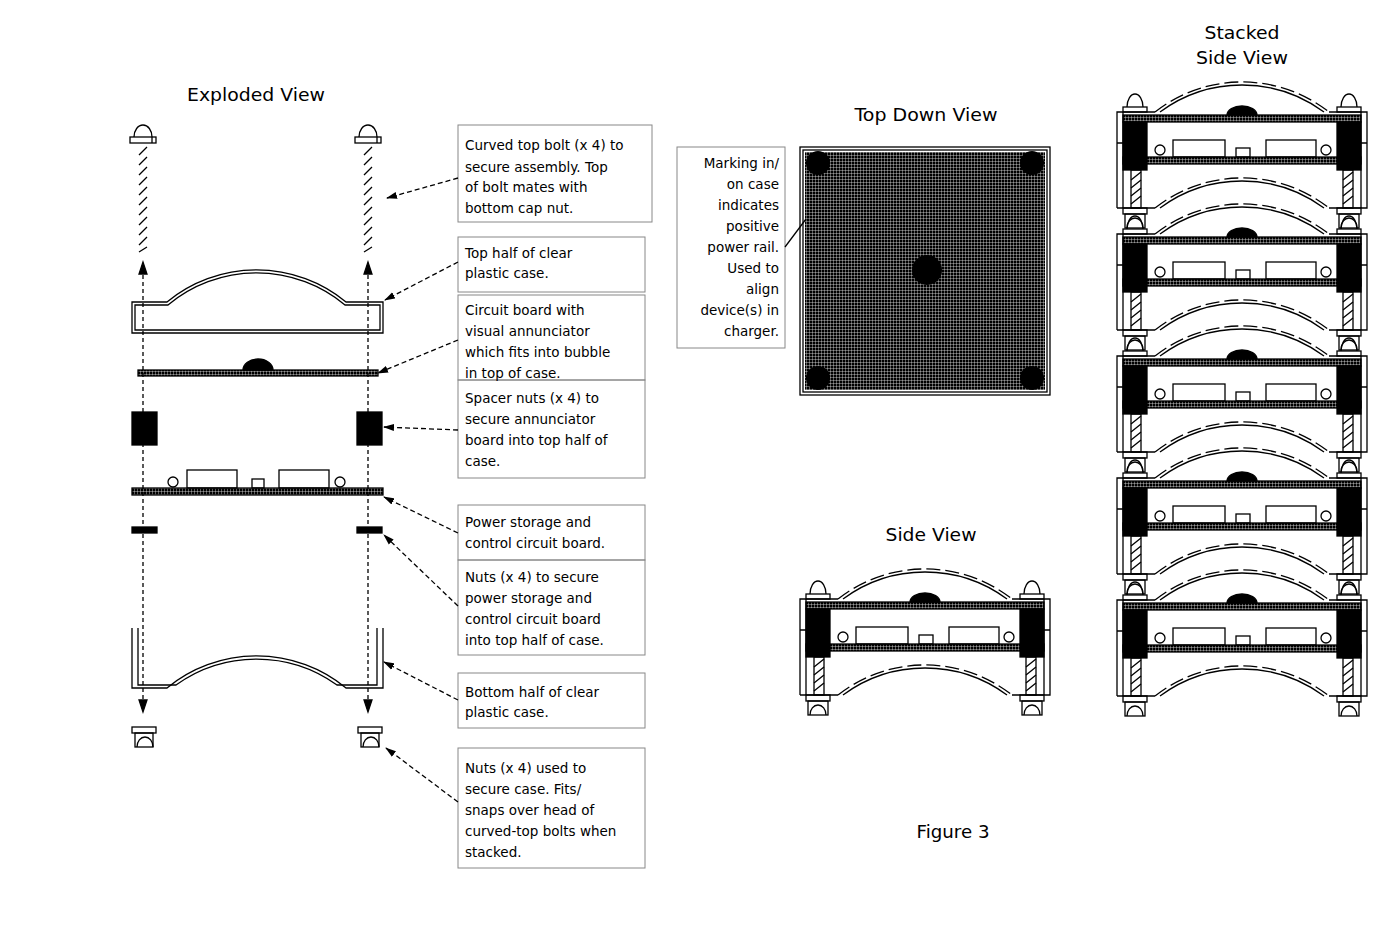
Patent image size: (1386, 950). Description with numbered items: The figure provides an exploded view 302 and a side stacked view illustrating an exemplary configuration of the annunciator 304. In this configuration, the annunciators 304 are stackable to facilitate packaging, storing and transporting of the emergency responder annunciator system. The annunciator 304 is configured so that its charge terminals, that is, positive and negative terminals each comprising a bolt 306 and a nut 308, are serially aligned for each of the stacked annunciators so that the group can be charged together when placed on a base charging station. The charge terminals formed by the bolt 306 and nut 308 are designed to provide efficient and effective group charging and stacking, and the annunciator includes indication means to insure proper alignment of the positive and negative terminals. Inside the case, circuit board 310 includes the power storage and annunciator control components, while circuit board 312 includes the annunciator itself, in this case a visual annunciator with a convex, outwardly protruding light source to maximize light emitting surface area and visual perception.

The exploded view 302 is at (218, 763).
The annunciator 304 is at (800, 608).
The bolt 306 is at (154, 133).
The nut 308 is at (357, 728).
The circuit board 310 is at (190, 497).
The circuit board 312 is at (183, 378).